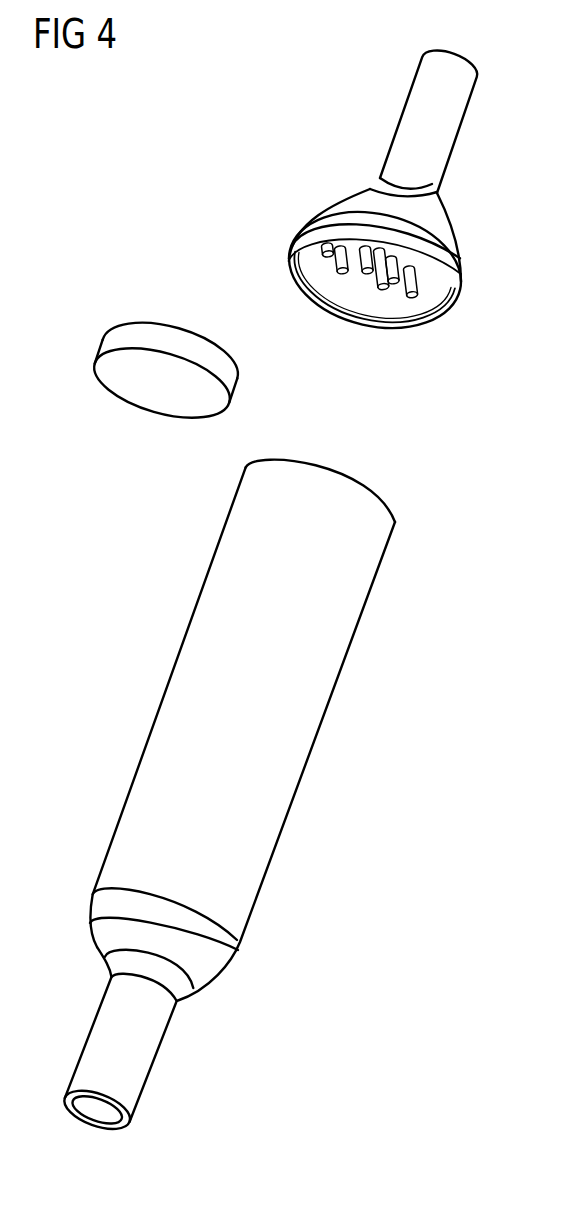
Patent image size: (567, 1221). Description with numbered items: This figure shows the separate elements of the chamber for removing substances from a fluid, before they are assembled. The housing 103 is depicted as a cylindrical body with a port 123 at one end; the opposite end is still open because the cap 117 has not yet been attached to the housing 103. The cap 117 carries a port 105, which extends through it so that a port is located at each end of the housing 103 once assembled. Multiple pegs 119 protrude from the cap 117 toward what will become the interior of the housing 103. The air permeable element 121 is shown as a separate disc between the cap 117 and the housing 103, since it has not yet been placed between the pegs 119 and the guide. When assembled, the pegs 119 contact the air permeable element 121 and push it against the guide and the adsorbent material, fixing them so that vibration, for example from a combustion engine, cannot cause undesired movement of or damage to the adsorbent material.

The housing 103 is at (338, 686).
The port 105 is at (468, 62).
The cap 117 is at (437, 238).
The pegs 119 is at (412, 293).
The air permeable element 121 is at (103, 332).
The port 123 is at (100, 1114).